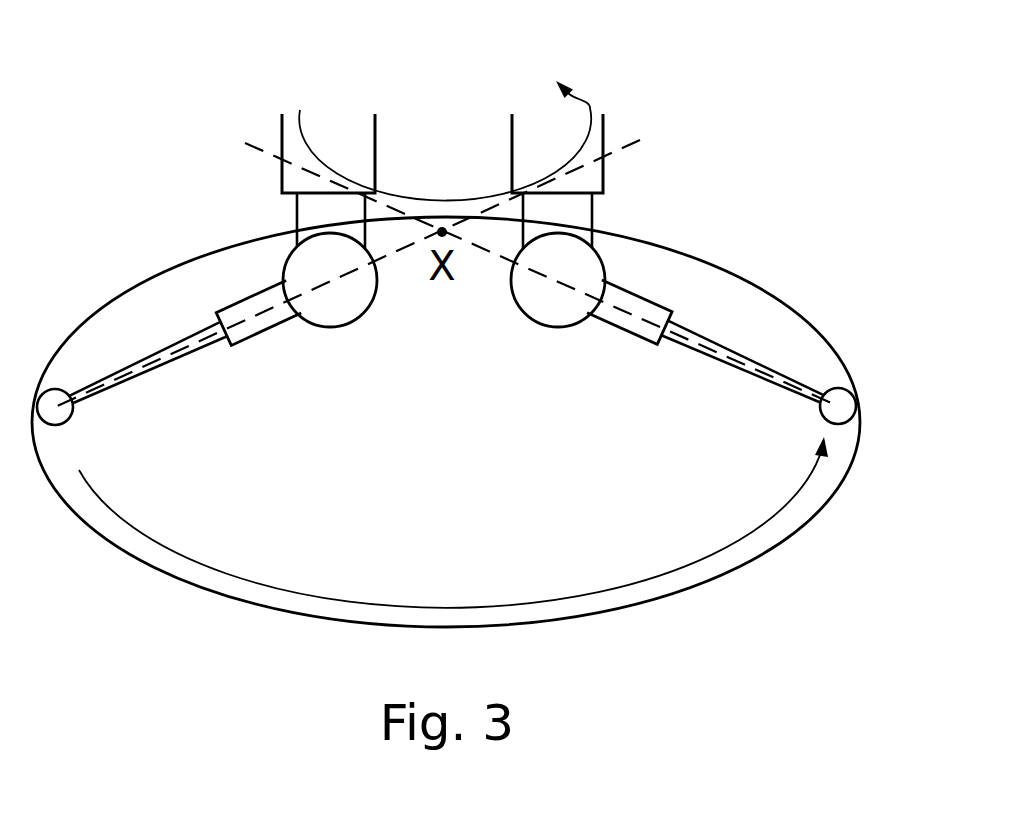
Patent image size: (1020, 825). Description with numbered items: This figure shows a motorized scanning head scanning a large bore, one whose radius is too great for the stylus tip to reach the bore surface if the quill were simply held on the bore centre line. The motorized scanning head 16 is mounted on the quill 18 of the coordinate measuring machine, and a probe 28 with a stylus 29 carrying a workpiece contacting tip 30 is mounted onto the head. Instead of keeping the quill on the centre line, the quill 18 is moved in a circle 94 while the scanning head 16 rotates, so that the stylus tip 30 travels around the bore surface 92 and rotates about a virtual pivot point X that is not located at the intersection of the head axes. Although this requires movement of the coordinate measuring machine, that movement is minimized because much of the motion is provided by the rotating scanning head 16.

The motorized scanning head 16 is at (601, 264).
The quill 18 is at (278, 140).
The probe 28 is at (647, 298).
The stylus 29 is at (733, 347).
The workpiece contacting tip 30 is at (853, 403).
The ring plate 92 is at (843, 355).
The circle 94 is at (413, 196).